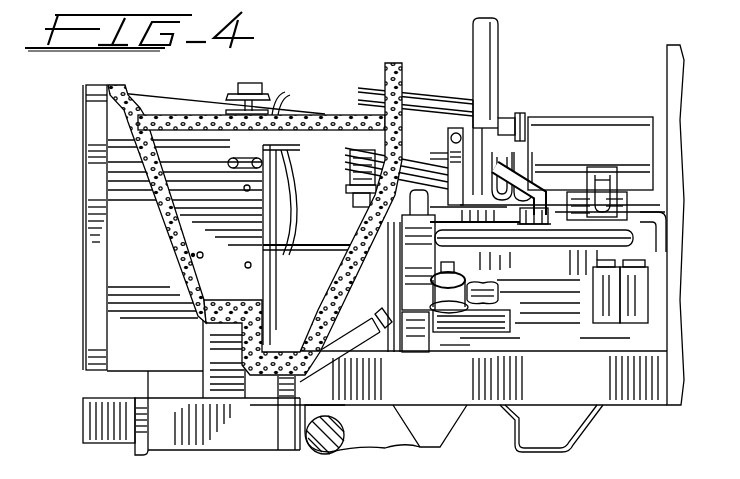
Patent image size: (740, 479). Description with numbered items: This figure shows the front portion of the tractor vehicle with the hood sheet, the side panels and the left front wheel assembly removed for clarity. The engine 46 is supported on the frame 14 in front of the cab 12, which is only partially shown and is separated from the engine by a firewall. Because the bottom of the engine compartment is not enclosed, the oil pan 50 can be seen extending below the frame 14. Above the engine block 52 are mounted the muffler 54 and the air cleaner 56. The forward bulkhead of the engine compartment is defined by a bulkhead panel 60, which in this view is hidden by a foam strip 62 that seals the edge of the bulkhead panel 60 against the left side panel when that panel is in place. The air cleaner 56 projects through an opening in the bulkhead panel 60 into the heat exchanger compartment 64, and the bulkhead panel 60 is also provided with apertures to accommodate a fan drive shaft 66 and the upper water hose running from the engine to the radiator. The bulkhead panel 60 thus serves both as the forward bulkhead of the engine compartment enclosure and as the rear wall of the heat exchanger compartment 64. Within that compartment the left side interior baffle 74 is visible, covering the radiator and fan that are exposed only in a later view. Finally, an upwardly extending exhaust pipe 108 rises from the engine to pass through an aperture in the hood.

The cab 12 is at (665, 88).
The frame 14 is at (648, 390).
The engine 46 is at (545, 103).
The oil pan 50 is at (568, 447).
The engine block 52 is at (558, 272).
The muffler 54 is at (555, 118).
The air cleaner 56 is at (410, 97).
The bulkhead panel 60 is at (299, 245).
The foam strip 62 is at (370, 222).
The heat exchanger compartment 64 is at (341, 152).
The fan drive shaft 66 is at (292, 242).
The left side interior baffle 74 is at (200, 158).
The exhaust pipe 108 is at (495, 82).